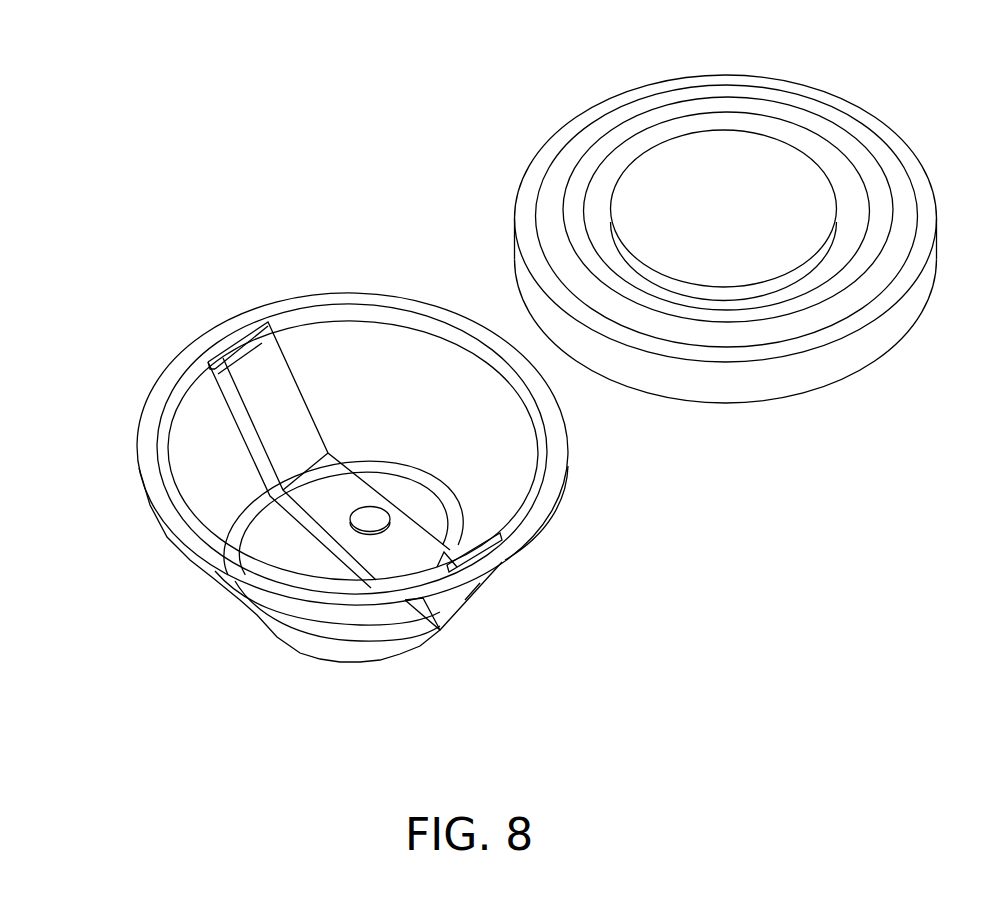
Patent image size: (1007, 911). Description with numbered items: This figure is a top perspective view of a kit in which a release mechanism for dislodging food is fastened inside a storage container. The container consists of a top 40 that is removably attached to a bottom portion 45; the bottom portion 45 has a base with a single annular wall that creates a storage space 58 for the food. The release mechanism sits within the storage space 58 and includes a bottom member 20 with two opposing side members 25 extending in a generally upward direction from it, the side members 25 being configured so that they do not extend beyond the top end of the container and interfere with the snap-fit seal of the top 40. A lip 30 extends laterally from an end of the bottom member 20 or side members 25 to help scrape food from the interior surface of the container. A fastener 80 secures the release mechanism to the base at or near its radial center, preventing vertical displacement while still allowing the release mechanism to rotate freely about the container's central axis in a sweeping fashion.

The top 40 is at (866, 88).
The bottom portion 45 is at (100, 491).
The storage space 58 is at (368, 409).
The bottom member 20 is at (396, 537).
The lip 30 is at (227, 383).
The side members 25 is at (255, 371).
The fastener 80 is at (370, 517).